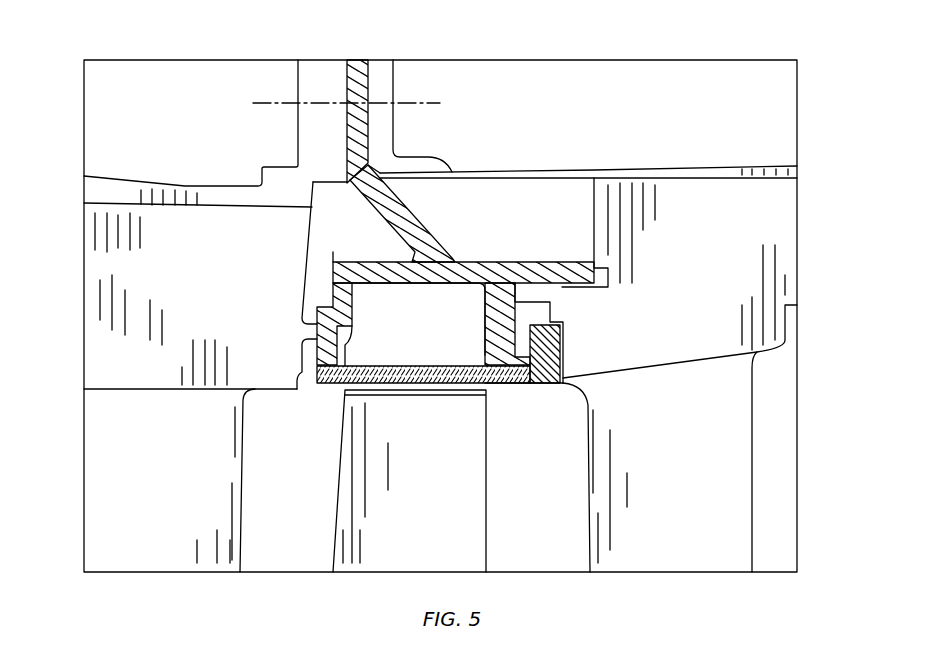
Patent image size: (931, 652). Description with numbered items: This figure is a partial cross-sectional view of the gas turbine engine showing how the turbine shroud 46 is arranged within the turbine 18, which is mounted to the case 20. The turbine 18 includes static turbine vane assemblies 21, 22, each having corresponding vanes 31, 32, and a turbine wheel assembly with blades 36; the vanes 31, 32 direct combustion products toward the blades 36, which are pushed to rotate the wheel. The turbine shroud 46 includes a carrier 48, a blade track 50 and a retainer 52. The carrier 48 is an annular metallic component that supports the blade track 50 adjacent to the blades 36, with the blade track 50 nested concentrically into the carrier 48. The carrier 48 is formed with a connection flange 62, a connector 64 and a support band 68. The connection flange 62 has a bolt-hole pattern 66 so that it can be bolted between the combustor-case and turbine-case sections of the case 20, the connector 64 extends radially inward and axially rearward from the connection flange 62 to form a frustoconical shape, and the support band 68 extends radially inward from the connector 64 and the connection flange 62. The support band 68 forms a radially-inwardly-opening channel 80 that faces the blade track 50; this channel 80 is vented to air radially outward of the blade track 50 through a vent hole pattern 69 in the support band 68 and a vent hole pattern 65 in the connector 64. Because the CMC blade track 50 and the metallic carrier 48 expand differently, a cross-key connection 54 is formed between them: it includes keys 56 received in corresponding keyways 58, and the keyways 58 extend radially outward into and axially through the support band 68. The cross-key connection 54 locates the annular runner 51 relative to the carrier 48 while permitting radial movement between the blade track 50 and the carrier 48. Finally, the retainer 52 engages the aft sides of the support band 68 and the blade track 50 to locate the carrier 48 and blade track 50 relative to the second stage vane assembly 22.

The turbine 18 is at (672, 100).
The case 20 is at (714, 172).
The static turbine vane assembly 21 is at (80, 494).
The second stage vane assembly 22 is at (762, 493).
The vanes 31 is at (125, 514).
The vanes 32 is at (718, 558).
The blades 36 is at (275, 500).
The turbine shroud 46 is at (457, 224).
The carrier 48 is at (412, 189).
The blade track 50 is at (333, 273).
The annular runner 51 is at (312, 378).
The retainer 52 is at (568, 333).
The cross-key connection 54 is at (532, 390).
The keys 56 is at (500, 388).
The keyways 58 is at (440, 384).
The connection flange 62 is at (372, 133).
The connector 64 is at (347, 193).
The vent hole pattern 65 is at (400, 204).
The bolt-hole pattern 66 is at (360, 100).
The support band 68 is at (348, 256).
The vent hole pattern 69 is at (383, 276).
The radially-inwardly-opening channel 80 is at (426, 337).